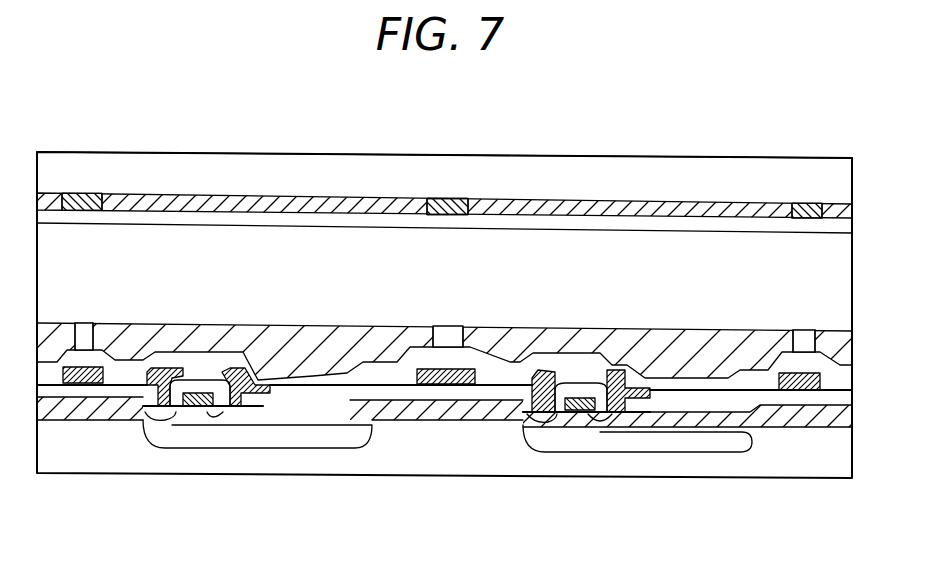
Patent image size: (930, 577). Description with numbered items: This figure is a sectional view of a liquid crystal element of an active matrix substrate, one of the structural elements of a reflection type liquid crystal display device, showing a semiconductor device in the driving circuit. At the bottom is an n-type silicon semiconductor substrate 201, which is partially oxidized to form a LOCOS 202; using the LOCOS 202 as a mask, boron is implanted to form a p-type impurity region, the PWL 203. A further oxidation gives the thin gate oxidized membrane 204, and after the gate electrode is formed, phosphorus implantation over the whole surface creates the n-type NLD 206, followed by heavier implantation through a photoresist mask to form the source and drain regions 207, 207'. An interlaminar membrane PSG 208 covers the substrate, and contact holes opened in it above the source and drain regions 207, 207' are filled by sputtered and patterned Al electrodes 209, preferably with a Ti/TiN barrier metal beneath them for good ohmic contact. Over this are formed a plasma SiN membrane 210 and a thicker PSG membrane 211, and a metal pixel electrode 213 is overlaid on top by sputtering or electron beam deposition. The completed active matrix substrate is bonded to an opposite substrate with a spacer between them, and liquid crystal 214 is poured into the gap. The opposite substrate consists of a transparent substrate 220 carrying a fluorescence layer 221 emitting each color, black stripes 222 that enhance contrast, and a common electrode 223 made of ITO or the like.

The semiconductor substrate 201 is at (838, 479).
The LOCOS 202 is at (785, 418).
The PWL 203 is at (706, 453).
The gate oxidized membrane 204 is at (582, 418).
The NLD 206 is at (562, 425).
The source region 207 is at (537, 471).
The drain region 207' is at (636, 471).
The interlaminar membrane PSG 208 is at (745, 395).
The Al electrodes 209 is at (617, 362).
The plasma SiN membrane 210 is at (540, 356).
The PSG membrane 211 is at (452, 337).
The pixel electrode 213 is at (323, 336).
The liquid crystal 214 is at (188, 248).
The transparent substrate 220 is at (532, 165).
The fluorescence layer 221 is at (276, 202).
The black stripes 222 is at (90, 192).
The common electrode 223 is at (688, 224).